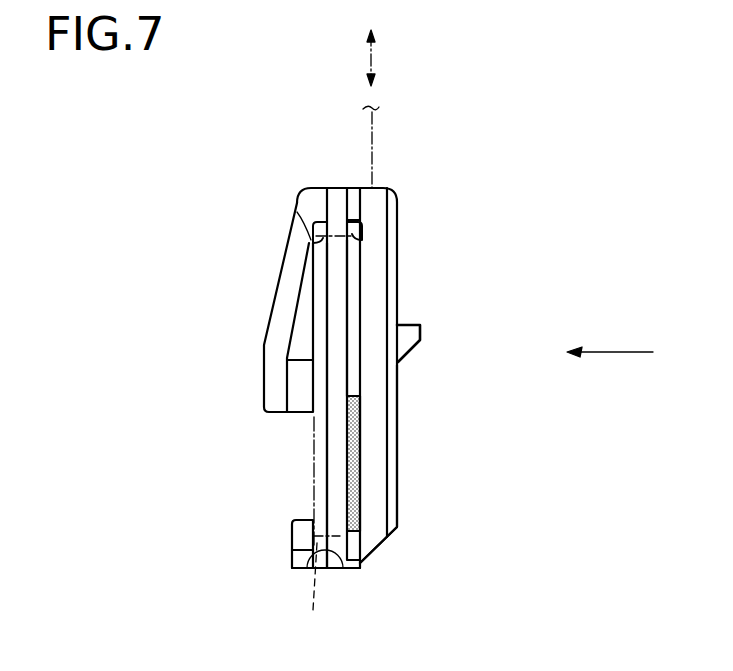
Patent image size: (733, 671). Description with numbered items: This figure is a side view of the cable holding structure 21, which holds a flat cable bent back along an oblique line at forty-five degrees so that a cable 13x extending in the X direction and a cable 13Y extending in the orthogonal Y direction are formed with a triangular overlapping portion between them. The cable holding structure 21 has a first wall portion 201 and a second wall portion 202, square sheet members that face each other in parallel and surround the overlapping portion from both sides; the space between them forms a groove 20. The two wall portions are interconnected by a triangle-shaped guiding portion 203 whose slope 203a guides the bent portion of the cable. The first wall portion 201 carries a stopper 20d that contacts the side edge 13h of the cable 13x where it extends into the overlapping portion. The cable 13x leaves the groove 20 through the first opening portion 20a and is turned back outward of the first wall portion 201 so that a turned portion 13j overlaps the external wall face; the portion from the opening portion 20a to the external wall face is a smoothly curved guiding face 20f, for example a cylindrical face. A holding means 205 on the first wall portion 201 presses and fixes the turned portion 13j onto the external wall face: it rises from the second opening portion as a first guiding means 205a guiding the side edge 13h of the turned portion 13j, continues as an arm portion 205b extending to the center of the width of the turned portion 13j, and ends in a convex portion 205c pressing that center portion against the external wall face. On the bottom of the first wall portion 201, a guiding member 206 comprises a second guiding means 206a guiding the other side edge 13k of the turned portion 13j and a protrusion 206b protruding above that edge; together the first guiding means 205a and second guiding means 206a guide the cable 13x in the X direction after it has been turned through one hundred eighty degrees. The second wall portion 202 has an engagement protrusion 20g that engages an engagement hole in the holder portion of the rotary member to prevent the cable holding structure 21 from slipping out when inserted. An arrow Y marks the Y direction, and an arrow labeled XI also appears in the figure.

The cable holding structure 21 is at (432, 195).
The groove 20 is at (357, 270).
The first opening portion 20a is at (355, 299).
The stopper 20d is at (362, 236).
The guiding face 20f is at (337, 378).
The engagement protrusion 20g is at (420, 330).
The guiding portion 203 is at (363, 431).
The slope 203a is at (357, 456).
The second wall portion 202 is at (398, 498).
The first wall portion 201 is at (327, 498).
The holding means 205 is at (269, 316).
The first guiding means 205a is at (310, 238).
The arm portion 205b is at (280, 282).
The convex portion 205c is at (299, 354).
The guiding member 206 is at (289, 568).
The second guiding means 206a is at (343, 568).
The protrusion 206b is at (290, 534).
The side edge 13h is at (297, 212).
The turned portion 13j is at (313, 430).
The cable extending in X direction 13x is at (313, 478).
The other side edge 13k is at (313, 595).
The cable extending in Y direction 13Y is at (374, 138).
The Y direction Y is at (373, 53).
The view direction XI is at (624, 351).